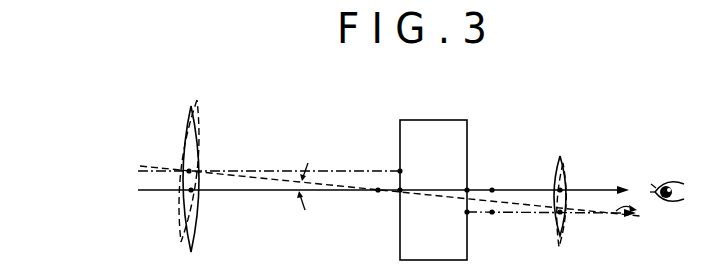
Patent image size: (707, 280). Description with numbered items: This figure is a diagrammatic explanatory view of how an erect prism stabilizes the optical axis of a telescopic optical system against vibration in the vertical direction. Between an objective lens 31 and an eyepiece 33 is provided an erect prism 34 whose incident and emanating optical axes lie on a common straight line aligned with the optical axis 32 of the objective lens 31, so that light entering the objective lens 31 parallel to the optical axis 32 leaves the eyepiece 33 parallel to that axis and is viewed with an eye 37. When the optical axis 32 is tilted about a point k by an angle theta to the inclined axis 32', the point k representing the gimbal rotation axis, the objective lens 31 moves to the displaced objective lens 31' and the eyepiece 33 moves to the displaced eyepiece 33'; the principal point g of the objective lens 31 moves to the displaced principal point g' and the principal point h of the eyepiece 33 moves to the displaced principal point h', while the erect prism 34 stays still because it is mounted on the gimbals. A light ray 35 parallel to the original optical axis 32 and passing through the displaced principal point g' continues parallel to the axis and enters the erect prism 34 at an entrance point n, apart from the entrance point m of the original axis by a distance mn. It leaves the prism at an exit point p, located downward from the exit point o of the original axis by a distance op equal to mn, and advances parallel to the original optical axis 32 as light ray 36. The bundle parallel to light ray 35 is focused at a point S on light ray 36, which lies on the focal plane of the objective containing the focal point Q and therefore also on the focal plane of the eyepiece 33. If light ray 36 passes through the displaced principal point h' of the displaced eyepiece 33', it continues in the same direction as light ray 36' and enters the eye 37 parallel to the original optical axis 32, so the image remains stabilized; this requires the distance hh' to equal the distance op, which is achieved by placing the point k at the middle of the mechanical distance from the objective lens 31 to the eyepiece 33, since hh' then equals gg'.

The objective lens 31 is at (210, 183).
The displaced objective lens 31' is at (213, 159).
The optical axis 32 is at (376, 210).
The inclined axis 32' is at (390, 163).
The eyepiece 33 is at (583, 177).
The displaced eyepiece 33' is at (584, 221).
The erect prism 34 is at (452, 130).
The light ray 35 is at (152, 175).
The light ray 36 is at (551, 244).
The light ray 36' is at (653, 226).
The eye 37 is at (671, 183).
The principal point of the objective lens g is at (210, 202).
The displaced principal point g' is at (212, 152).
The point K k is at (378, 192).
The entrance point n is at (401, 171).
The entrance point m is at (401, 190).
The exit point o is at (468, 189).
The exit point p is at (466, 214).
The focal point Q is at (493, 189).
The point S is at (492, 214).
The principal point of the eyepiece h is at (547, 174).
The displaced principal point h' is at (580, 225).